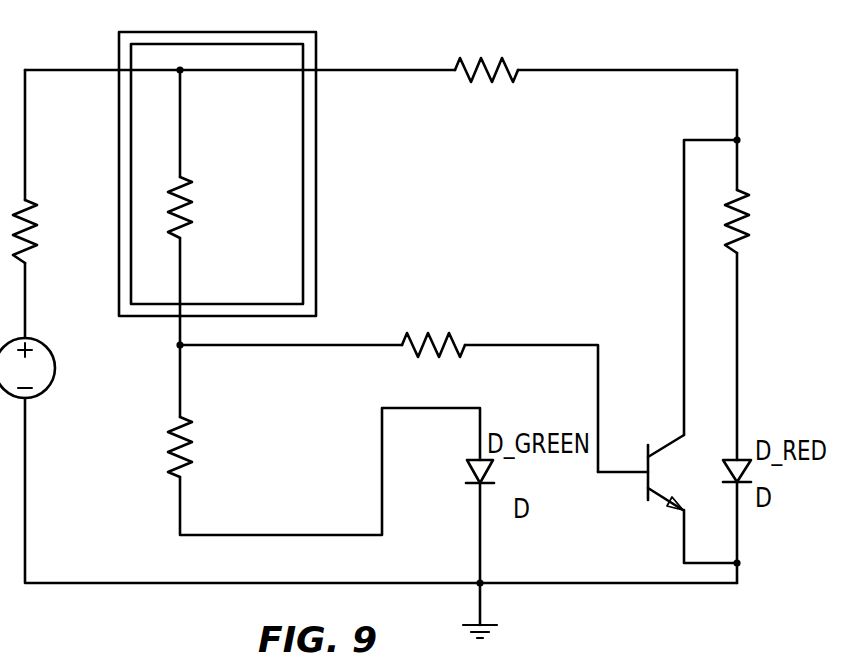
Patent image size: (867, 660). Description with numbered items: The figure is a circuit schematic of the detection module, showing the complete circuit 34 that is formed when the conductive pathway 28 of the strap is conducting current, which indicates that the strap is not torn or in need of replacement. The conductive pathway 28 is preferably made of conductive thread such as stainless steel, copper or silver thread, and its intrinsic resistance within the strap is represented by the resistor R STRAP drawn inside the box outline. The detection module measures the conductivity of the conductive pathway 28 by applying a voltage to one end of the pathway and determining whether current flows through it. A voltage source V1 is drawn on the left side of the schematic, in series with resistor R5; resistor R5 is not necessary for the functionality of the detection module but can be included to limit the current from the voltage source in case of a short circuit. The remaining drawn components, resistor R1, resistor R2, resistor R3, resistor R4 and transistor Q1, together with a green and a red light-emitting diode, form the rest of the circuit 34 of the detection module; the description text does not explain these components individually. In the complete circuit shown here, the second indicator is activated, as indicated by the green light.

The conductive pathway 28 is at (180, 110).
The circuit 34 is at (655, 70).
The resistor R1 4.6k R1 is at (204, 450).
The resistor R2 100 R2 is at (756, 224).
The resistor R3 1k R3 is at (433, 346).
The resistor R4 220 R4 is at (486, 70).
The resistor R5 is at (43, 235).
The NPN transistor Q1 is at (670, 461).
The voltage source V1 is at (36, 358).